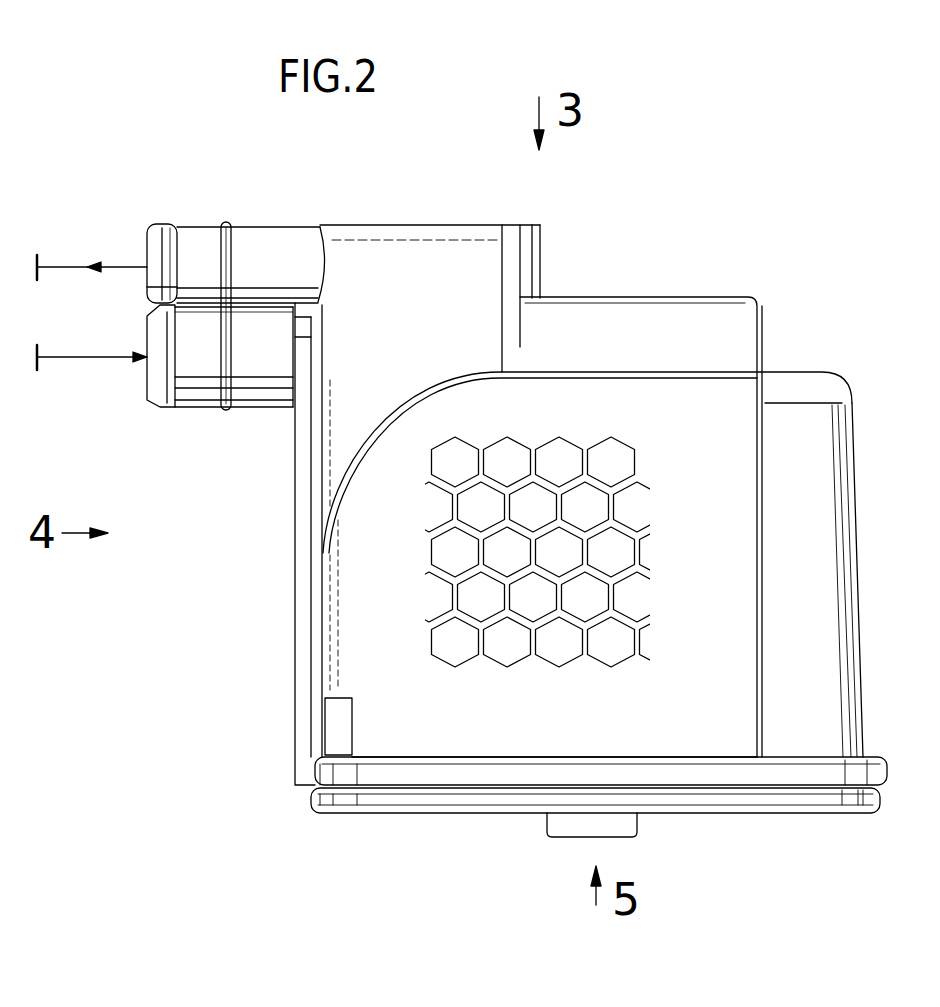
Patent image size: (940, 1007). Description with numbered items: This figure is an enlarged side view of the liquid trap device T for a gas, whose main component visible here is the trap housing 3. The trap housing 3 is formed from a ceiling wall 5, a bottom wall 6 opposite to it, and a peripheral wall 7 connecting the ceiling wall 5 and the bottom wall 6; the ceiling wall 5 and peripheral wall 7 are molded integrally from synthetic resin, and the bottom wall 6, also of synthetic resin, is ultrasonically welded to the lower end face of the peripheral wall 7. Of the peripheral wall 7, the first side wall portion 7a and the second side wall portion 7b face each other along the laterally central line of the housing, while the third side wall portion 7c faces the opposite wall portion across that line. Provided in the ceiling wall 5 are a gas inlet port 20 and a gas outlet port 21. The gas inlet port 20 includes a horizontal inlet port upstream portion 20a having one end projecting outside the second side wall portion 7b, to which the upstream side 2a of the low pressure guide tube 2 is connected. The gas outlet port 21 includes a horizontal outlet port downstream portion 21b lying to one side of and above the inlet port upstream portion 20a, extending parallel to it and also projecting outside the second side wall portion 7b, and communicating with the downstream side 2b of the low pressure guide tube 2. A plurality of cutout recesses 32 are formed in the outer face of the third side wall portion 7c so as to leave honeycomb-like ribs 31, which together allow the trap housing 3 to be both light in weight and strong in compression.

The low pressure guide tube 2 is at (92, 301).
The upstream side of the low pressure guide tube 2a is at (92, 357).
The downstream side of the low pressure guide tube 2b is at (105, 268).
The trap housing 3 is at (820, 451).
The ceiling wall 5 is at (655, 372).
The bottom wall 6 is at (717, 795).
The peripheral wall 7 is at (587, 546).
The first side wall portion 7a is at (863, 635).
The second side wall portion 7b is at (312, 590).
The third side wall portion 7c is at (537, 695).
The gas inlet port 20 is at (207, 394).
The inlet port upstream portion 20a is at (202, 392).
The gas outlet port 21 is at (236, 292).
The outlet port downstream portion 21b is at (203, 248).
The honeycomb-like ribs 31 is at (573, 523).
The cutout recesses 32 is at (592, 583).
The liquid trap device T is at (664, 282).